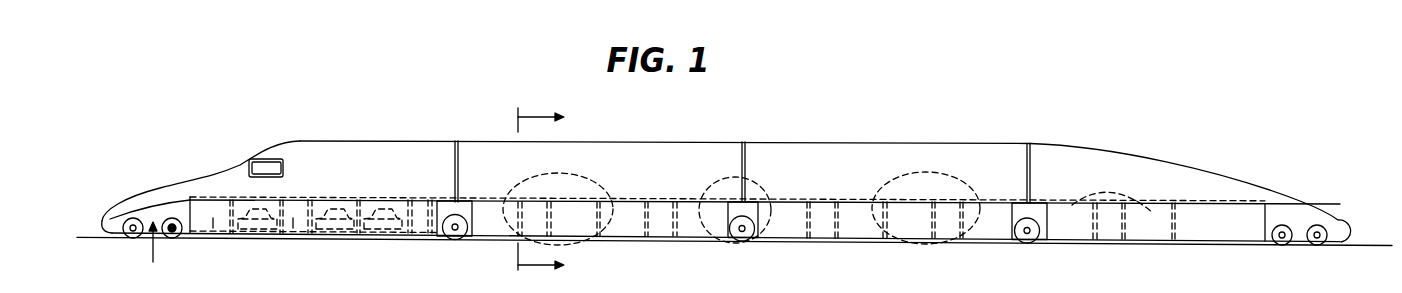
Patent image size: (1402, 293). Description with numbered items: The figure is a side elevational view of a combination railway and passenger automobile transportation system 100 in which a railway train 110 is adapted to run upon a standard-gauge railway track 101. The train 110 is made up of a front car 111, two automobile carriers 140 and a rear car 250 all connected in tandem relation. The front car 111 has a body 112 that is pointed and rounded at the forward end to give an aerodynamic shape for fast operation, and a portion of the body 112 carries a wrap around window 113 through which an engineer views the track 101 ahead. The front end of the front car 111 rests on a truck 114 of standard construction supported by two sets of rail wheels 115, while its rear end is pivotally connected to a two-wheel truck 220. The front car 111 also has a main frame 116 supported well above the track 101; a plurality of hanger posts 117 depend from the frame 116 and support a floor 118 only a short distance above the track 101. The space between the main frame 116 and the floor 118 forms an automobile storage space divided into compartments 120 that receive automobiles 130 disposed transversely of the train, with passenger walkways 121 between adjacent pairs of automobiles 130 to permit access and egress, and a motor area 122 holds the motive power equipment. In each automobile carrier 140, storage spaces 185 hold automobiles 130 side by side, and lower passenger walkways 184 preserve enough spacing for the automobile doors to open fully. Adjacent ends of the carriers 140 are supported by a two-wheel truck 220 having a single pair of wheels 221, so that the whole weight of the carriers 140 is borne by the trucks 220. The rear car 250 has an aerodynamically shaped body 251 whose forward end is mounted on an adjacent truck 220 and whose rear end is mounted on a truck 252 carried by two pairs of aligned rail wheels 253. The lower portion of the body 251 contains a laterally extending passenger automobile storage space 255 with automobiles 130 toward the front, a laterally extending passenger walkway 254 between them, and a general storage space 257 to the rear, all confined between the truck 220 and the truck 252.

The combination railway and passenger automobile transportation system 100 is at (187, 69).
The railway track 101 is at (85, 236).
The railway train 110 is at (785, 113).
The front car 111 is at (318, 136).
The body 112 is at (385, 157).
The wrap around window 113 is at (243, 167).
The truck 114 is at (152, 256).
The rail wheels 115 is at (127, 237).
The main frame 116 is at (337, 197).
The hanger posts 117 is at (418, 240).
The floor 118 is at (350, 240).
The compartments 120 is at (305, 238).
The passenger walkways 121 is at (430, 200).
The motor area 122 is at (230, 240).
The automobiles 130 is at (260, 236).
The automobile carriers 140 is at (603, 157).
The lower passenger walkways 184 is at (533, 227).
The storage spaces 185 is at (741, 203).
The two-wheel truck 220 is at (728, 243).
The wheels 221 is at (459, 219).
The rear car 250 is at (1202, 197).
The body 251 is at (1187, 170).
The truck 252 is at (1323, 231).
The rail wheels 253 is at (1323, 229).
The passenger walkway 254 is at (1117, 237).
The passenger automobile storage space 255 is at (1112, 192).
The general storage space 257 is at (1193, 230).